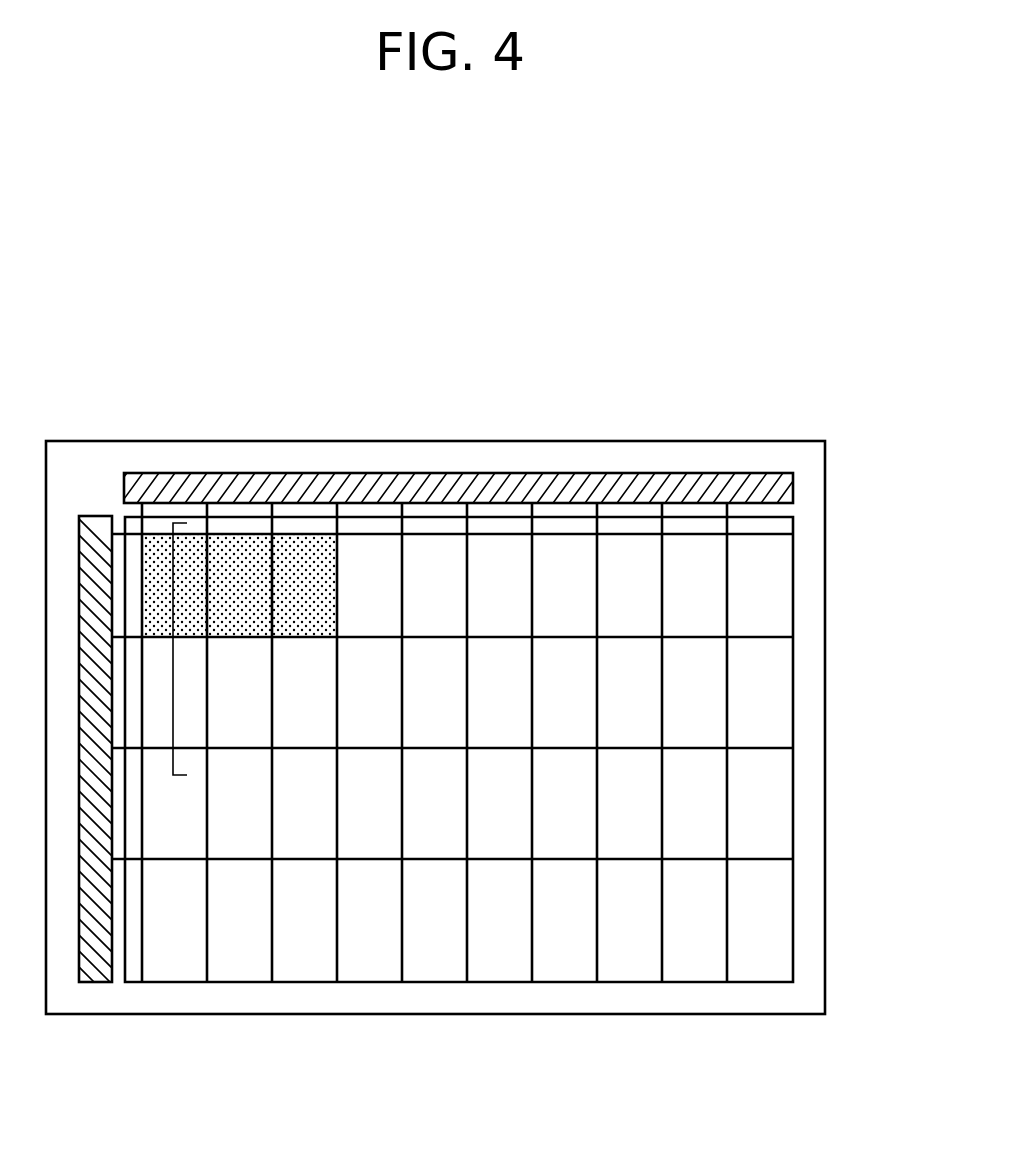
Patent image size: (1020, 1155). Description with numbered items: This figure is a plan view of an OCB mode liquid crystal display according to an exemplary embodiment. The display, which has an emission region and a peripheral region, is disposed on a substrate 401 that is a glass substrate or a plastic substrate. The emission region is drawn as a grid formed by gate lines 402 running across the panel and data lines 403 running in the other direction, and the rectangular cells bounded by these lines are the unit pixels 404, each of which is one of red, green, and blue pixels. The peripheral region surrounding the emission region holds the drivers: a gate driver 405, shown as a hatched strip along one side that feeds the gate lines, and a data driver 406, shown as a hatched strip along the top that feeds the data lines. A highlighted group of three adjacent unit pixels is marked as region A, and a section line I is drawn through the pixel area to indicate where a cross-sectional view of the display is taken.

The substrate 401 is at (815, 505).
The gate lines 402 is at (562, 533).
The data lines 403 is at (597, 593).
The unit pixels 404 is at (578, 580).
The gate driver 405 is at (93, 525).
The data driver 406 is at (458, 482).
The pixel region A is at (245, 552).
The line I-I' I is at (186, 651).